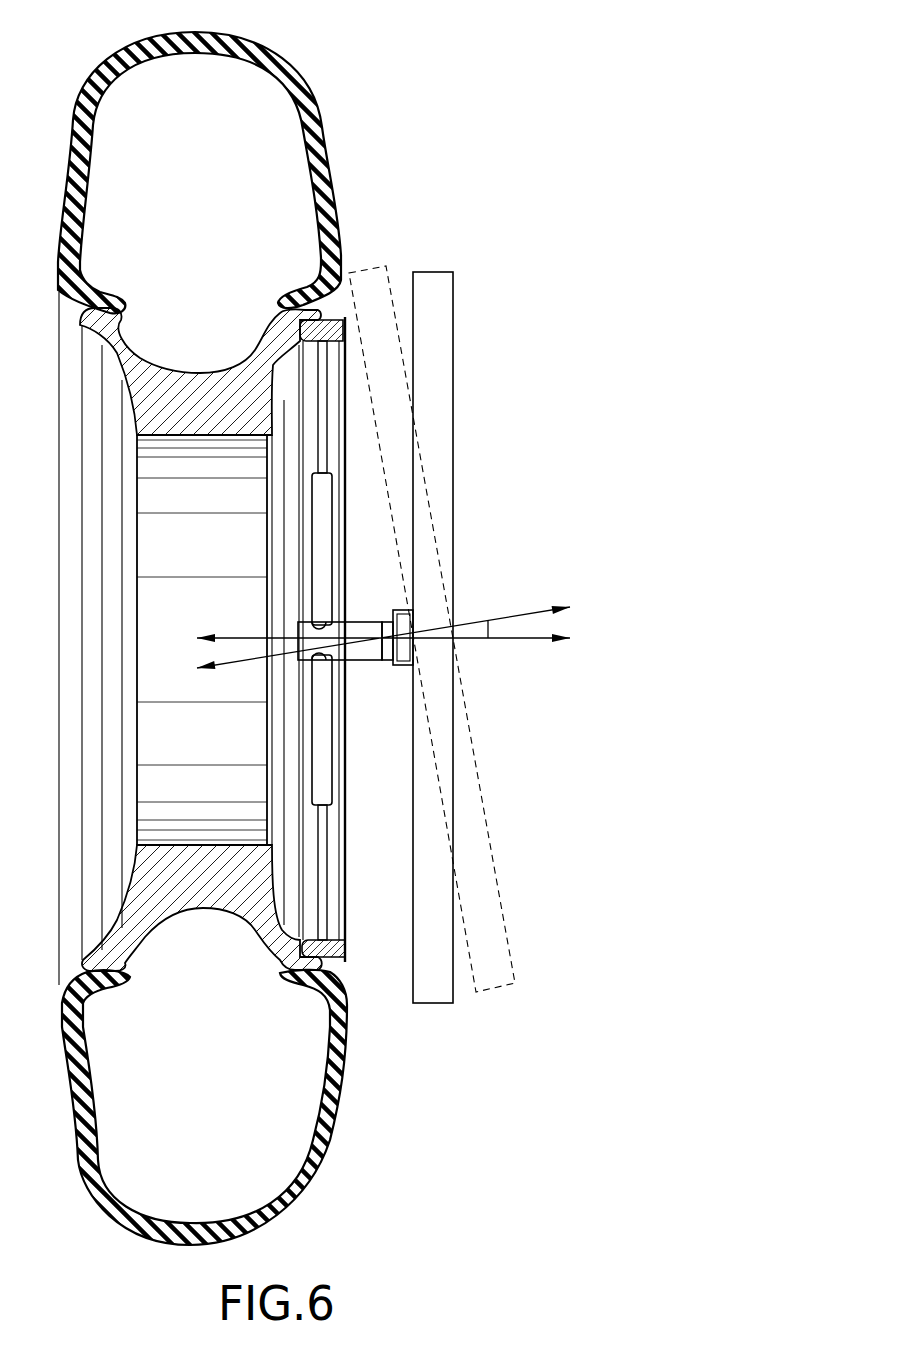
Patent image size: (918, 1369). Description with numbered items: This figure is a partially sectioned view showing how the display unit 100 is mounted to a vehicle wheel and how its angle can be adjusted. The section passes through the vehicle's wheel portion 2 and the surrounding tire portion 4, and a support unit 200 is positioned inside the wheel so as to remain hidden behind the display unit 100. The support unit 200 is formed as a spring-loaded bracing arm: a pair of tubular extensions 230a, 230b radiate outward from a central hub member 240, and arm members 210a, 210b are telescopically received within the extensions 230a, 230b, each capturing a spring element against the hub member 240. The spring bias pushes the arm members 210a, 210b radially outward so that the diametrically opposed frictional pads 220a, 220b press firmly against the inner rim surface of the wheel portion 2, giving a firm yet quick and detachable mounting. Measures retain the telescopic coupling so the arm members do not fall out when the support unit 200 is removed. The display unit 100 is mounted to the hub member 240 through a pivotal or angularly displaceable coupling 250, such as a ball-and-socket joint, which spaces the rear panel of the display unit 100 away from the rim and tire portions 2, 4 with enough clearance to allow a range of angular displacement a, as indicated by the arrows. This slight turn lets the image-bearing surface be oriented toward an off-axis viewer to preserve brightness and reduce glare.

The wheel portion 2 is at (149, 316).
The tire portion 4 is at (272, 98).
The display unit 100 is at (431, 272).
The support unit 200 is at (322, 350).
The arm member 210a is at (322, 452).
The arm member 210b is at (322, 868).
The frictional pad 220a is at (335, 325).
The frictional pad 220b is at (345, 958).
The tubular extension 230a is at (322, 547).
The tubular extension 230b is at (322, 747).
The hub member 240 is at (310, 632).
The angularly displaceable coupling 250 is at (387, 646).
The angular displacement a is at (488, 627).